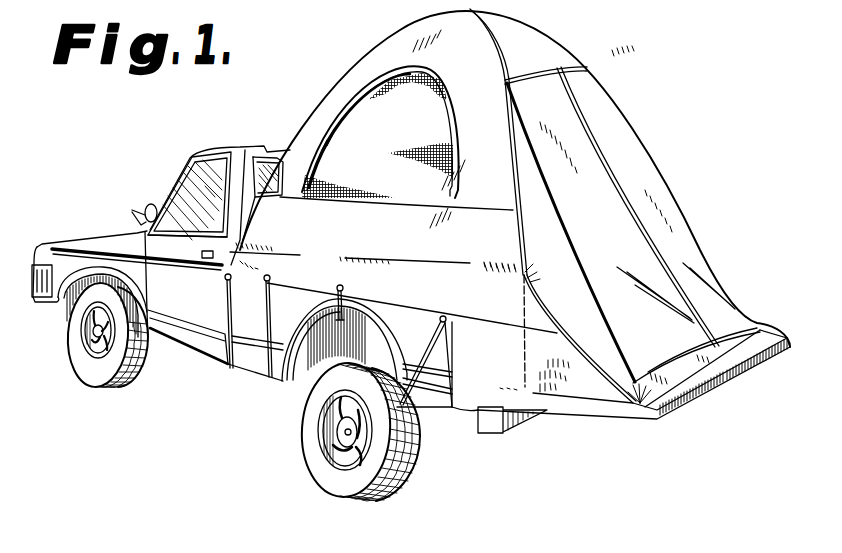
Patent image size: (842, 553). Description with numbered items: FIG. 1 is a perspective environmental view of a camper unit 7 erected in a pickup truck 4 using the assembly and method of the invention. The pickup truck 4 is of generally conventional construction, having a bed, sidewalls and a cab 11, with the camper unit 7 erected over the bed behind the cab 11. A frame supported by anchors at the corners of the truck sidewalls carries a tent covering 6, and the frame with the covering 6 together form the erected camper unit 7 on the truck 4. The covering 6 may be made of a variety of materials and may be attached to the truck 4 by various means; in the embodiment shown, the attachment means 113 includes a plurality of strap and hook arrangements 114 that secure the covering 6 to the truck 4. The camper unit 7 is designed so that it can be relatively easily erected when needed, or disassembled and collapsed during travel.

The pickup truck 4 is at (95, 233).
The cab 11 is at (220, 150).
The tent covering 6 is at (525, 37).
The camper unit 7 is at (387, 47).
The attachment means 113 is at (260, 307).
The strap and hook arrangements 114 is at (227, 297).